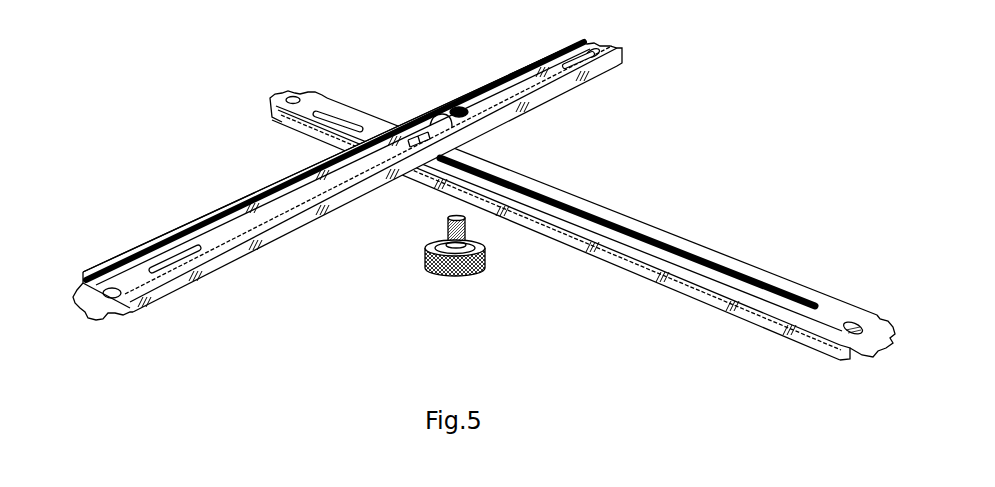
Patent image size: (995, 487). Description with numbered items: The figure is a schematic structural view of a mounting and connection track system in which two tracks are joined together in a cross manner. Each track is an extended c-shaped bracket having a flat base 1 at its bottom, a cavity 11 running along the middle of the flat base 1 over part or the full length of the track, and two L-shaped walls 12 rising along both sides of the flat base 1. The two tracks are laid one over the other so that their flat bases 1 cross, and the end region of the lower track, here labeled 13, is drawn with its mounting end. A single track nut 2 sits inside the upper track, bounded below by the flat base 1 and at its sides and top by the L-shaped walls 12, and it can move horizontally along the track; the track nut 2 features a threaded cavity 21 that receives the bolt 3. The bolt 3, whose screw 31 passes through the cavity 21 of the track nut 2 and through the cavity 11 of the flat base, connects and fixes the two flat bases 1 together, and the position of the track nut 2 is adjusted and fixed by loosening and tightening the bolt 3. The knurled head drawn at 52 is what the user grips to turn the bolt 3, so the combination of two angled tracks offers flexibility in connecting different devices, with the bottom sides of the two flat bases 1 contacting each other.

The flat base 1 is at (461, 193).
The cavity 11 is at (157, 250).
The L-shaped walls 12 is at (260, 190).
The end mounting plate 13 is at (817, 313).
The track nut 2 is at (386, 84).
The cavity 21 is at (437, 107).
The bolt 3 is at (452, 263).
The screw 31 is at (440, 242).
The knurled knob 52 is at (473, 270).